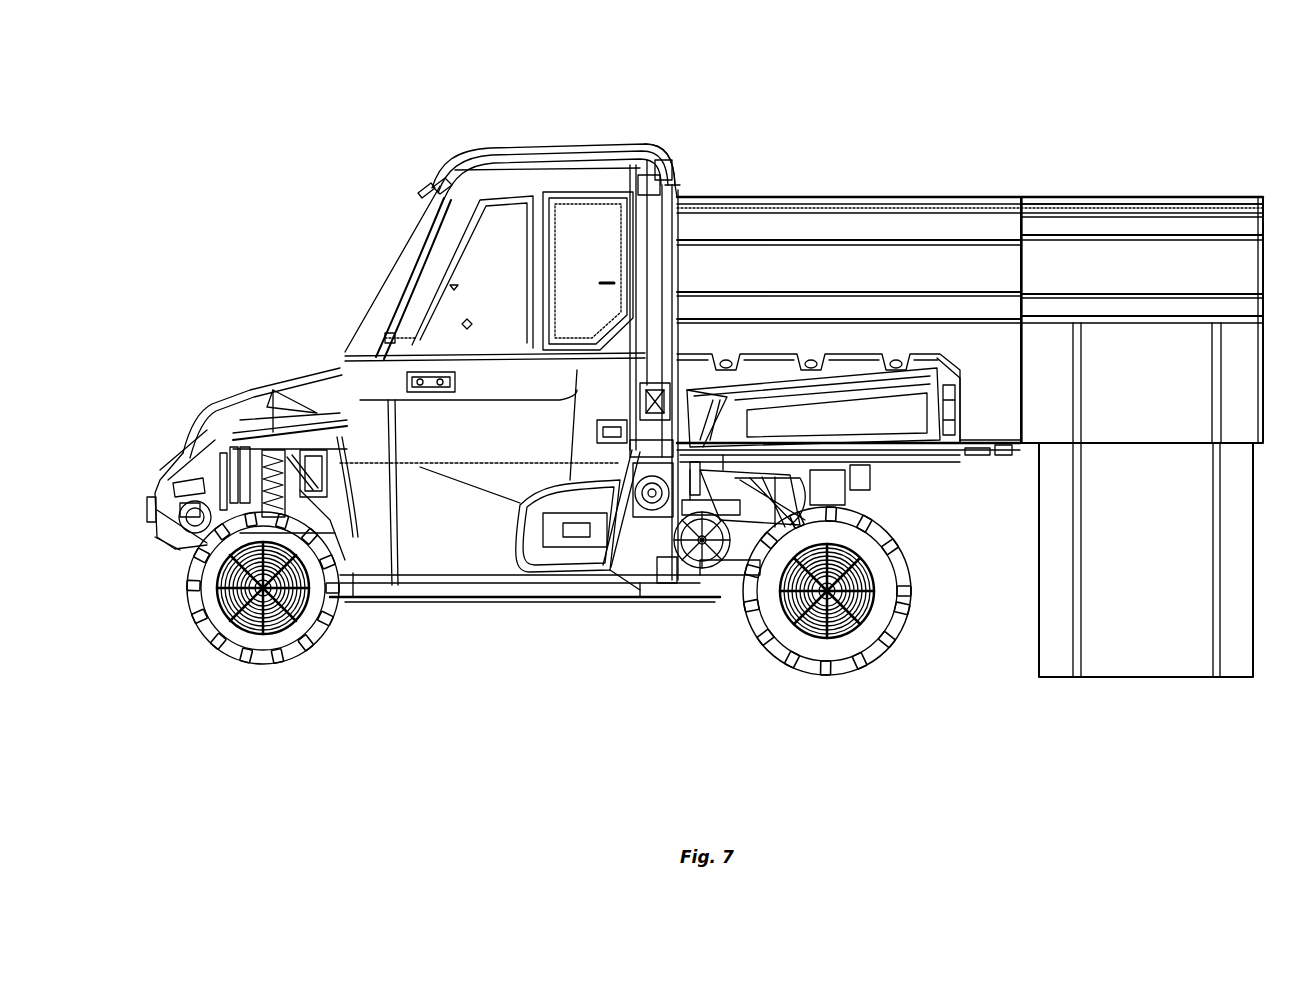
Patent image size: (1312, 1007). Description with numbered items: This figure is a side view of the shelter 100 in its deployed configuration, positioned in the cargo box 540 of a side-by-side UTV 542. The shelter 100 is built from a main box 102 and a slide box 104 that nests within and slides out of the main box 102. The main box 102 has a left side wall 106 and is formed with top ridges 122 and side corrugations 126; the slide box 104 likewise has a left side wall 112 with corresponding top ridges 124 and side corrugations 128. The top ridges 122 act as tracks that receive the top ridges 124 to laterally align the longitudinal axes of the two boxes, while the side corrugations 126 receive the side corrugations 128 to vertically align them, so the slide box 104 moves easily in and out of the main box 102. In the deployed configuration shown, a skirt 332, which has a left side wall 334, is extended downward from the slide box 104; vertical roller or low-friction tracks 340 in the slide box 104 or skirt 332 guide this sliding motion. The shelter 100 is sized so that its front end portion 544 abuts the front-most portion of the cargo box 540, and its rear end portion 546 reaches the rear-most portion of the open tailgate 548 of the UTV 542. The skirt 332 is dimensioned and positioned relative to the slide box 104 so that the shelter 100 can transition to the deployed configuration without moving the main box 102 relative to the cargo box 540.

The shelter 100 is at (1075, 84).
The main box 102 is at (903, 179).
The slide box 104 is at (1153, 184).
The left side wall 106 is at (989, 352).
The left side wall 112 is at (1028, 347).
The top ridges 122 is at (752, 198).
The top ridges 124 is at (1043, 199).
The side corrugations 126 is at (993, 238).
The side corrugations 128 is at (1103, 212).
The skirt 332 is at (1134, 700).
The left side wall 334 is at (1108, 650).
The roller or low-friction tracks 340 is at (1222, 670).
The cargo box 540 is at (872, 413).
The side-by-side UTV 542 is at (322, 233).
The front end portion 544 is at (679, 173).
The rear end portion 546 is at (1256, 194).
The tailgate 548 is at (1001, 458).